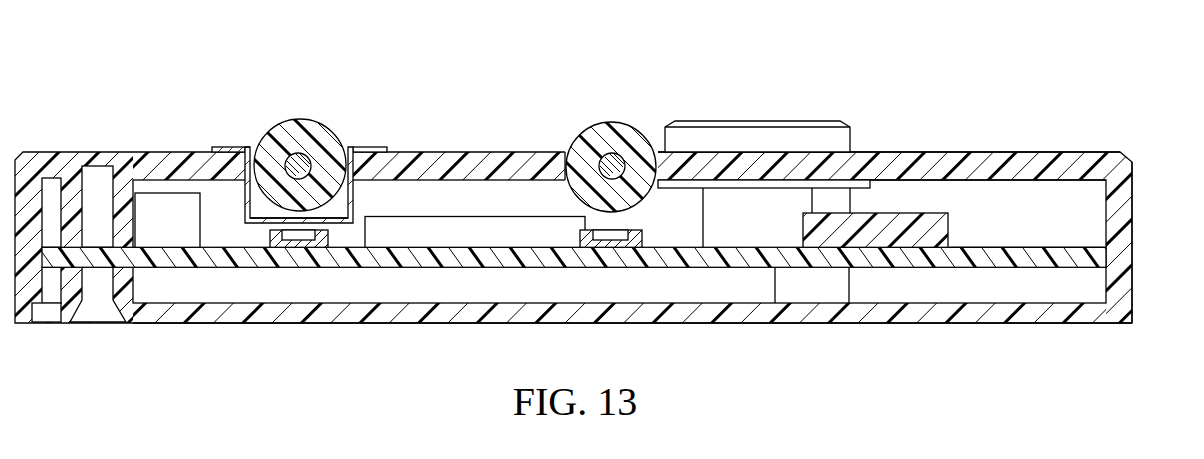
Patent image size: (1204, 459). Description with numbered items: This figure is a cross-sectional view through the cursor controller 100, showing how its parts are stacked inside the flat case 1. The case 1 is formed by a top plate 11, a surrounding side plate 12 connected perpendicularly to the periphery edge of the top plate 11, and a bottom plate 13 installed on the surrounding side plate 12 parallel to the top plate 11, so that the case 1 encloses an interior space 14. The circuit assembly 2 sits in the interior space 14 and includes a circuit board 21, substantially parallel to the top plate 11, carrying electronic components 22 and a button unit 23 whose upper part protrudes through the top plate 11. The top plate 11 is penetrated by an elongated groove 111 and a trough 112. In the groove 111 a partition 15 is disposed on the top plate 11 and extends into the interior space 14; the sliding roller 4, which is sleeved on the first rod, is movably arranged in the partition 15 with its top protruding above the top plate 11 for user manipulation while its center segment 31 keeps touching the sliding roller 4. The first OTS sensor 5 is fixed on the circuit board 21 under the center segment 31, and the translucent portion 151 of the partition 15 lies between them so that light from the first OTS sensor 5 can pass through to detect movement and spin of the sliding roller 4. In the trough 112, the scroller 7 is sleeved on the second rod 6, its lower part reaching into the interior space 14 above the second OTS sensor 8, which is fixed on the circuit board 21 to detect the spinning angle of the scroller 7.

The cursor controller 100 is at (58, 72).
The case 1 is at (602, 236).
The top plate 11 is at (1005, 158).
The surrounding side plate 12 is at (1122, 236).
The bottom plate 13 is at (988, 312).
The interior space 14 is at (914, 196).
The partition 15 is at (288, 152).
The translucent portion 151 is at (335, 218).
The groove 111 is at (250, 150).
The trough 112 is at (565, 150).
The circuit assembly 2 is at (568, 272).
The circuit board 21 is at (1036, 255).
The electronic components 22 is at (806, 232).
The button unit 23 is at (760, 133).
The center segment 31 is at (298, 158).
The sliding roller 4 is at (300, 143).
The first OTS sensor 5 is at (266, 231).
The second rod 6 is at (606, 157).
The scroller 7 is at (609, 144).
The second OTS sensor 8 is at (641, 230).